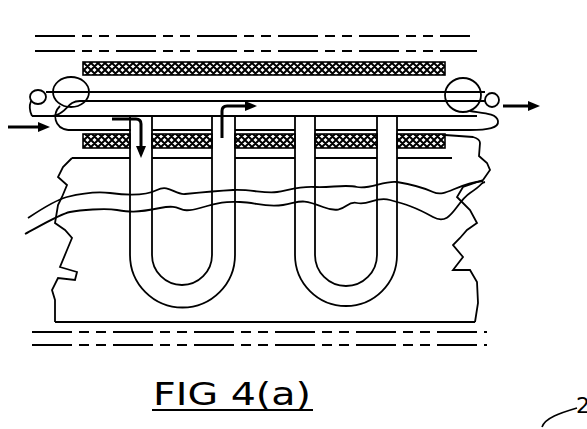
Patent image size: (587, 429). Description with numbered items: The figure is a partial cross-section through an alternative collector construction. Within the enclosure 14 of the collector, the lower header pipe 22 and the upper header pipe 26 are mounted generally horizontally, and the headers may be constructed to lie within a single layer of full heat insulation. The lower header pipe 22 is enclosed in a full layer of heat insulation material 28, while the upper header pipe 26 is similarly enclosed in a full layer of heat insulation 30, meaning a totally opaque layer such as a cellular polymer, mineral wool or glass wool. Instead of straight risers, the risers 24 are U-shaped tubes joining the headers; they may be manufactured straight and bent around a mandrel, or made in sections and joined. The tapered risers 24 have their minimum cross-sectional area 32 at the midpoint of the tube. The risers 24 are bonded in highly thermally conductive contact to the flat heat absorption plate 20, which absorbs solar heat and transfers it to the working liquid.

The enclosure 14 is at (470, 36).
The upper header pipe 26 is at (470, 78).
The lower header pipe 22 is at (487, 90).
The risers 24 is at (400, 233).
The heat insulation material 28 is at (324, 158).
The heat insulation 30 is at (483, 165).
The heat absorption plate 20 is at (470, 270).
The minimum cross-sectional area 32 is at (370, 298).